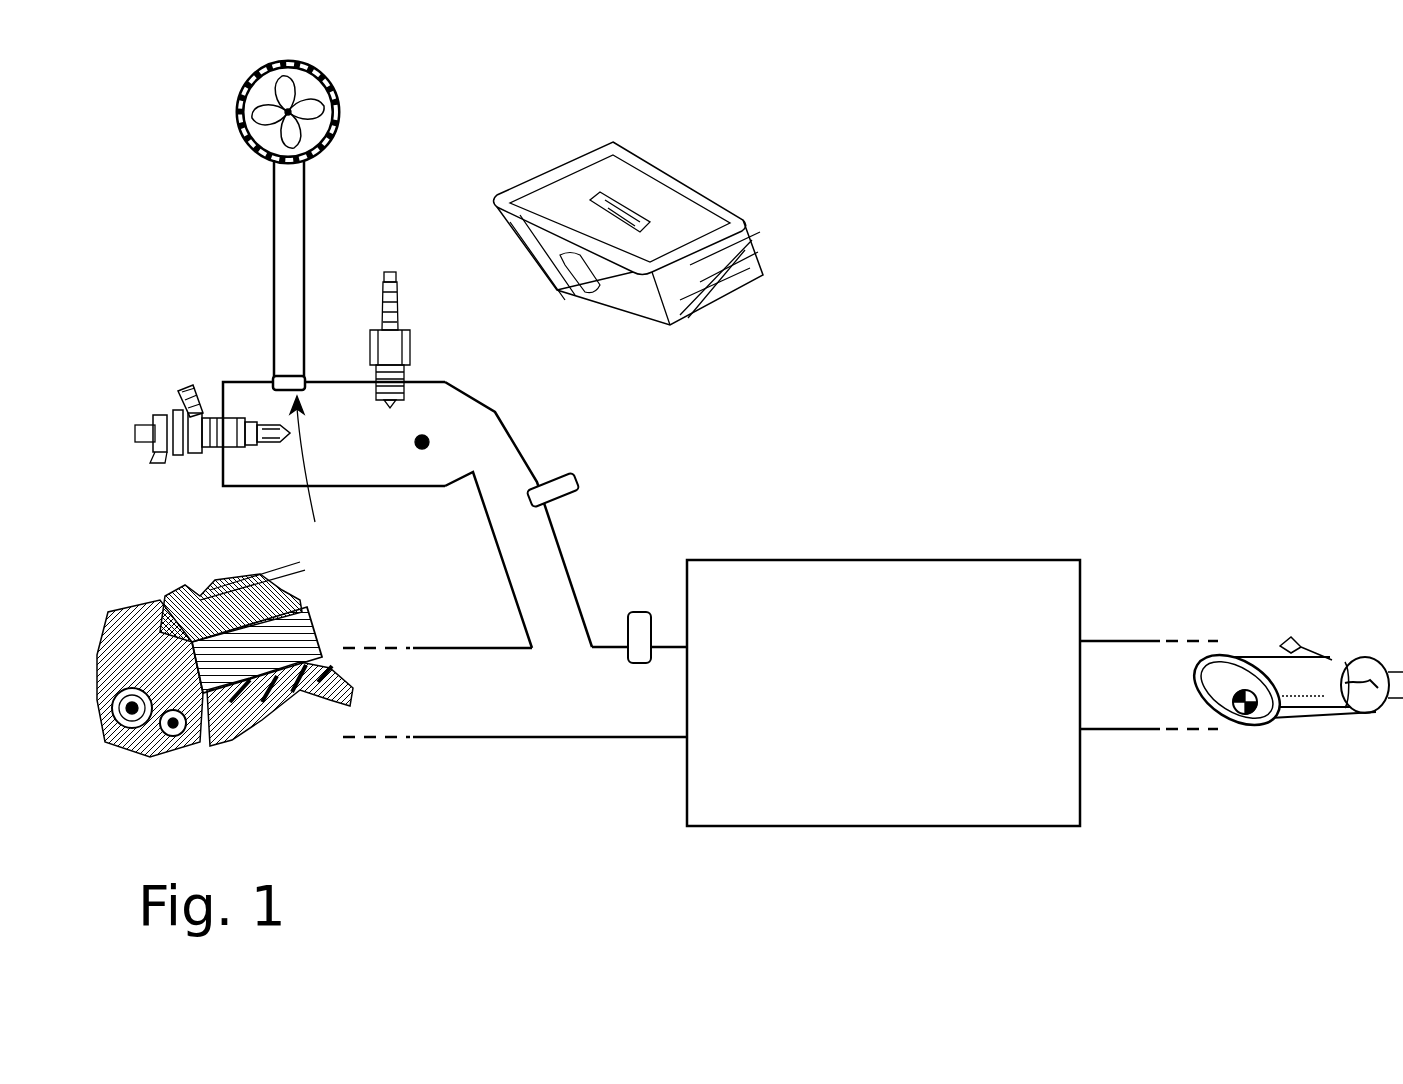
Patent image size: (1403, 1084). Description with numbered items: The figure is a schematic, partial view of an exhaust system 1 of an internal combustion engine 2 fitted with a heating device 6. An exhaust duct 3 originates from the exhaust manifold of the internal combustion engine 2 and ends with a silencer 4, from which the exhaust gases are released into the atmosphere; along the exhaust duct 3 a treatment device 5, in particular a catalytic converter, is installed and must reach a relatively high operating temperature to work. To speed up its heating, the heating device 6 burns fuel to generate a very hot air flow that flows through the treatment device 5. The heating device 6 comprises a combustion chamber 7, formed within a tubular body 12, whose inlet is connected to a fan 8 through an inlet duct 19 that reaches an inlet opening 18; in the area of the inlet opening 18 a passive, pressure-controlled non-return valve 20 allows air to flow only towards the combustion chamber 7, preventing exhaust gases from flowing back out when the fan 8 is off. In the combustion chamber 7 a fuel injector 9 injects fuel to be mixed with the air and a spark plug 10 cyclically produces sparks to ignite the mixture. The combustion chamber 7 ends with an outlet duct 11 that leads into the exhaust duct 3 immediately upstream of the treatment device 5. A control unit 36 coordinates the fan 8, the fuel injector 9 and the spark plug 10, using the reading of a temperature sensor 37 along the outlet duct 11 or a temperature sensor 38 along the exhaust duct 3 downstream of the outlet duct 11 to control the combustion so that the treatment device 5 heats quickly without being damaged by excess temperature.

The exhaust system 1 is at (1250, 175).
The internal combustion engine 2 is at (197, 690).
The exhaust duct 3 is at (583, 740).
The silencer 4 is at (1292, 700).
The treatment device 5 is at (931, 826).
The heating device 6 is at (182, 240).
The combustion chamber 7 is at (421, 450).
The fan 8 is at (288, 110).
The fuel injector 9 is at (192, 454).
The spark plug 10 is at (393, 328).
The outlet duct 11 is at (510, 582).
The tubular body 12 is at (363, 487).
The inlet opening 18 is at (312, 474).
The inlet duct 19 is at (273, 330).
The non-return valve 20 is at (291, 382).
The control unit 36 is at (673, 205).
The temperature sensor 37 is at (562, 483).
The temperature sensor 38 is at (635, 627).